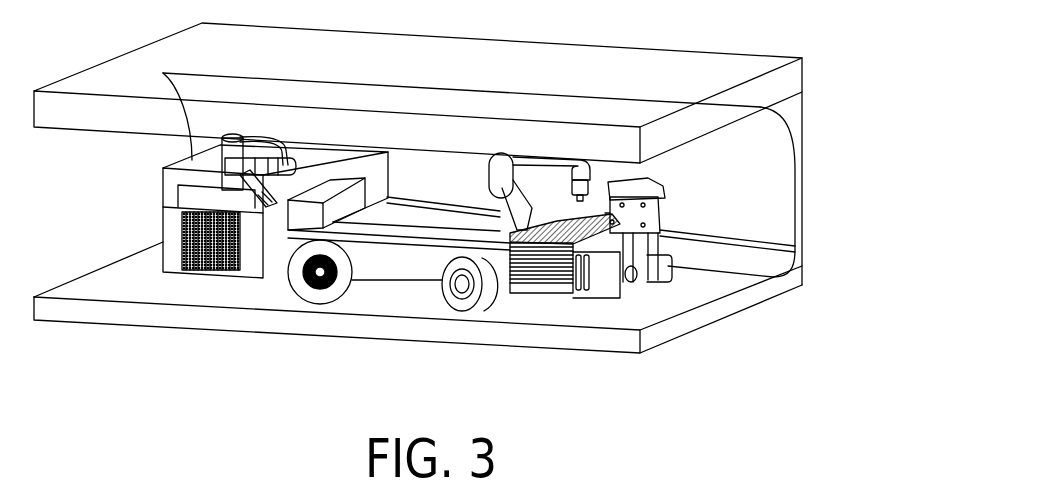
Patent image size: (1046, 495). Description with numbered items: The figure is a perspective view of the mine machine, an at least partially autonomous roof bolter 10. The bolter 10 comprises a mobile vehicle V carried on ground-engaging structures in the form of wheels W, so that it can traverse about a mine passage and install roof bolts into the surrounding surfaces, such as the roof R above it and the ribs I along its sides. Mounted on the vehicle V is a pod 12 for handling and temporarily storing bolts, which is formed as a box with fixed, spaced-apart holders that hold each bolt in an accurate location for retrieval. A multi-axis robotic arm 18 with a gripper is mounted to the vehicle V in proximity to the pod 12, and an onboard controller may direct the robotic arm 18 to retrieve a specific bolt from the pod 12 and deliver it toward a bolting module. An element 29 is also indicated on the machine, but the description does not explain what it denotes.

The roof bolter 10 is at (656, 302).
The roof R is at (723, 130).
The ribs I is at (755, 205).
The mobile vehicle V is at (404, 280).
The wheels W is at (323, 304).
The pod 12 is at (557, 292).
The multi-axis robotic arm 18 is at (495, 167).
The inspection unit 29 is at (675, 218).